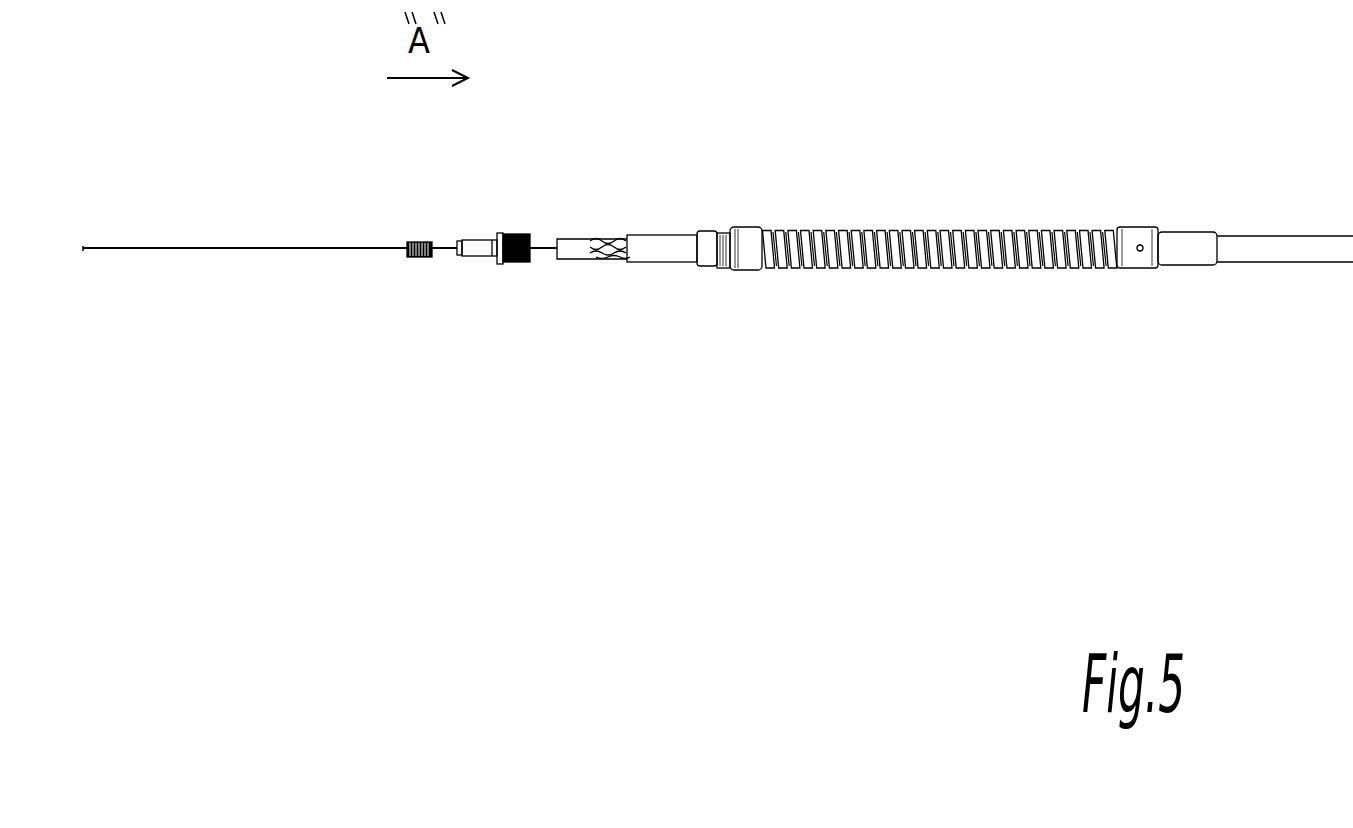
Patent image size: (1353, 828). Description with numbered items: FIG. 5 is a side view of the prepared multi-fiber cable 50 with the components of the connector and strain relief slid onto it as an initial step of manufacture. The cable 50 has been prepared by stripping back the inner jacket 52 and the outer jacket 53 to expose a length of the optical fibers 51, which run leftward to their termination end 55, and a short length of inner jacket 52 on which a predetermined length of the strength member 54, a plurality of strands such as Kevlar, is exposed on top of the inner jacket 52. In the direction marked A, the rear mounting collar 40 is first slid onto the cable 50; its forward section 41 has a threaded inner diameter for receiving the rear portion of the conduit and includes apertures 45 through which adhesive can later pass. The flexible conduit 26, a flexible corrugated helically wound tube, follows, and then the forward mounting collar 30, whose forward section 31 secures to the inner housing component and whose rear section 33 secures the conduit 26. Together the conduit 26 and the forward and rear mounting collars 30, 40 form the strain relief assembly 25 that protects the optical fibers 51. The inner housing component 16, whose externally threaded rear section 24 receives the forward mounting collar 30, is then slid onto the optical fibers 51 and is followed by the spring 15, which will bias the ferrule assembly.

The spring 15 is at (417, 241).
The inner housing component 16 is at (482, 242).
The rear section of inner housing component 24 is at (520, 263).
The strain relief assembly 25 is at (985, 97).
The flexible conduit 26 is at (857, 233).
The forward mounting collar 30 is at (763, 236).
The forward section of forward mounting collar 31 is at (703, 238).
The rear section of forward mounting collar 33 is at (748, 261).
The rear mounting collar 40 is at (1170, 235).
The forward section of rear mounting collar 41 is at (1137, 246).
The apertures 45 is at (1140, 252).
The multi-fiber cable 50 is at (1270, 238).
The optical fibers 51 is at (142, 253).
The inner jacket 52 is at (575, 257).
The outer jacket 53 is at (665, 259).
The strength member 54 is at (607, 237).
The termination end 55 is at (88, 250).